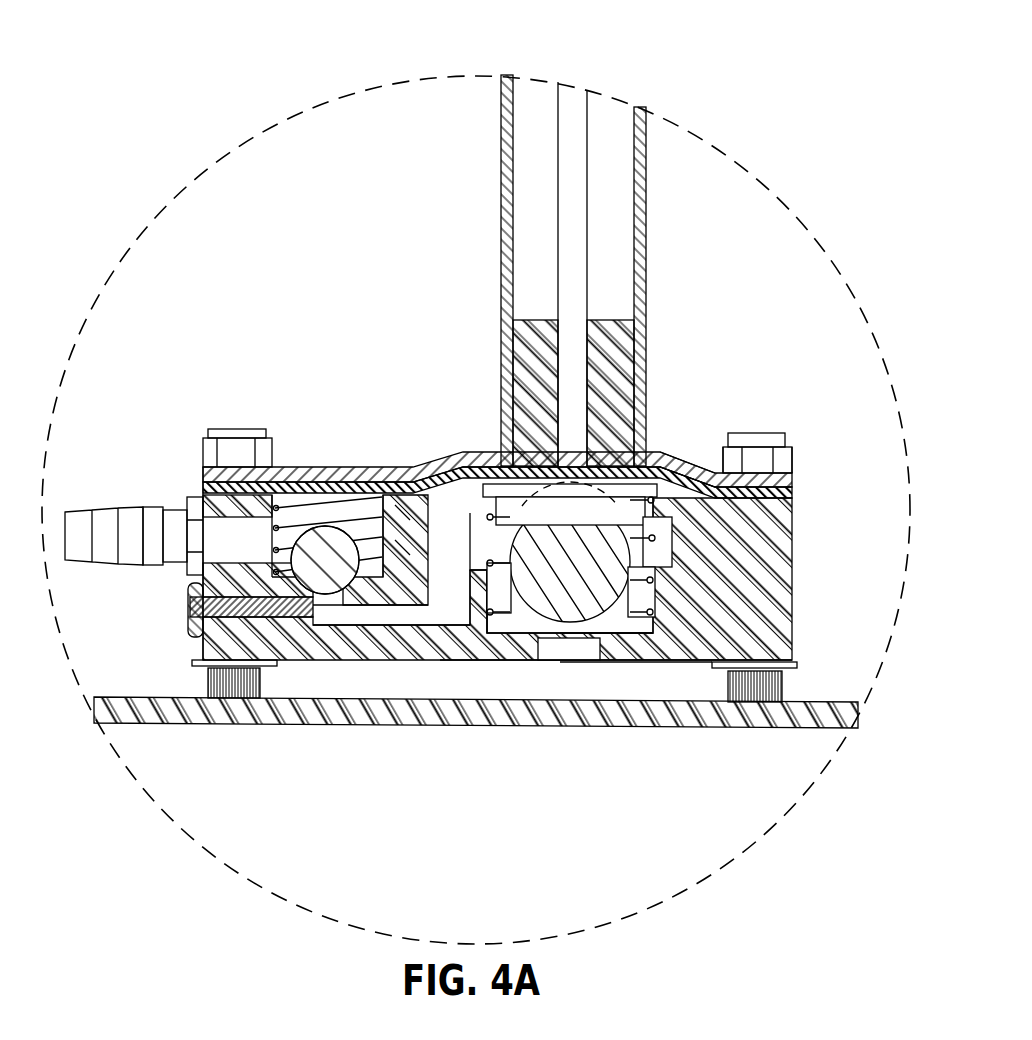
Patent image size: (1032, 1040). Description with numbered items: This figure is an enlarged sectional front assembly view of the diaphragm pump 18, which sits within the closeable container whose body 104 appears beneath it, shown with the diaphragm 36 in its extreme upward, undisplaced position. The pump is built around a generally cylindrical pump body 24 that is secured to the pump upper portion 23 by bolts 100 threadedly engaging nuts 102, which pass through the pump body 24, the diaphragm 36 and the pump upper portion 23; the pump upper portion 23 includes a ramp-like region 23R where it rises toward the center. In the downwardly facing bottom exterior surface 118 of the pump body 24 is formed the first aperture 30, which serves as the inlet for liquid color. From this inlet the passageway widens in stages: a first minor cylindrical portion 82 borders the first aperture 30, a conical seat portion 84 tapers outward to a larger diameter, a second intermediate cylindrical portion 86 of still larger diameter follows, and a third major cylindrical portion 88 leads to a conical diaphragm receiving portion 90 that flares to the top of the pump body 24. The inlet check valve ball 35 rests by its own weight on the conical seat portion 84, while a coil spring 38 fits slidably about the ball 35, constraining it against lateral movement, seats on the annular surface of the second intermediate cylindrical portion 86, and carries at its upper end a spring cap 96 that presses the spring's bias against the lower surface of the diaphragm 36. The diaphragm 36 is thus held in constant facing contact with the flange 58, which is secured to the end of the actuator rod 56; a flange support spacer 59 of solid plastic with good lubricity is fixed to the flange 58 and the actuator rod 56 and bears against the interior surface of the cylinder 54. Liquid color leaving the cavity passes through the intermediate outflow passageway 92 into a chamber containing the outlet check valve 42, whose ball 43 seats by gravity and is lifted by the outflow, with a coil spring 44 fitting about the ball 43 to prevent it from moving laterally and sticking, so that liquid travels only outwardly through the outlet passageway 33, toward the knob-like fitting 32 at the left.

The diaphragm pump 18 is at (735, 331).
The pump upper portion 23 is at (707, 452).
The ramp portion of top plate 23R is at (662, 452).
The pump body 24 is at (790, 582).
The first aperture 30 is at (593, 633).
The knob 32 is at (190, 528).
The outlet passageway 33 is at (200, 560).
The ball 35 is at (565, 605).
The diaphragm 36 is at (790, 490).
The coil spring 38 is at (490, 568).
The outlet check valve 42 is at (345, 468).
The ball 43 is at (323, 583).
The coil spring 44 is at (313, 467).
The cylinder 54 is at (640, 238).
The actuator rod 56 is at (572, 100).
The flange 58 is at (486, 455).
The flange support spacer 59 is at (615, 358).
The first minor cylindrical portion 82 is at (500, 605).
The conical seat portion 84 is at (605, 640).
The second intermediate cylindrical portion 86 is at (460, 622).
The third major cylindrical portion 88 is at (667, 533).
The conical diaphragm receiving portion 90 is at (760, 447).
The intermediate outflow passageway 92 is at (370, 612).
The spring cap 96 is at (480, 484).
The bolts 100 is at (767, 683).
The nuts 102 is at (785, 458).
The body 104 is at (417, 712).
The bottom exterior surface 118 is at (675, 662).